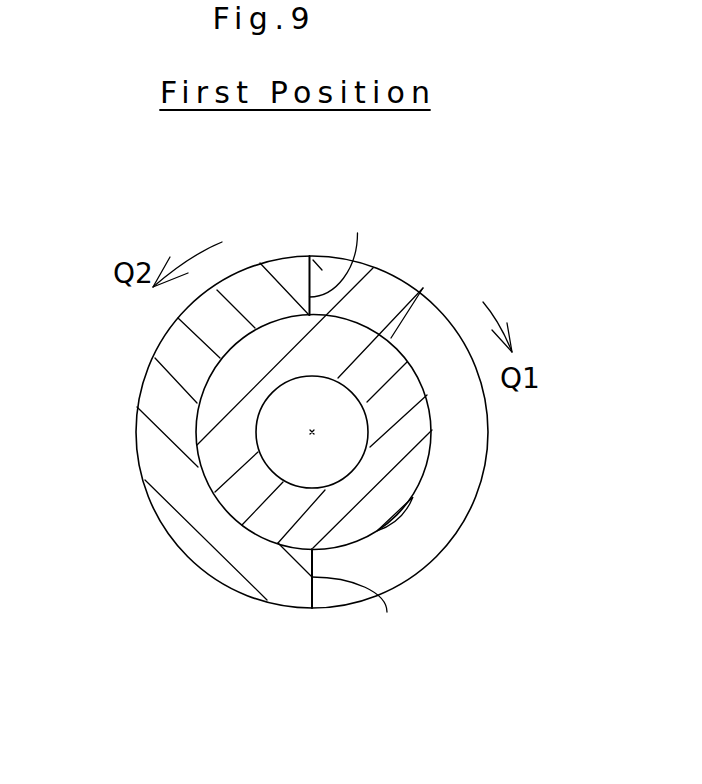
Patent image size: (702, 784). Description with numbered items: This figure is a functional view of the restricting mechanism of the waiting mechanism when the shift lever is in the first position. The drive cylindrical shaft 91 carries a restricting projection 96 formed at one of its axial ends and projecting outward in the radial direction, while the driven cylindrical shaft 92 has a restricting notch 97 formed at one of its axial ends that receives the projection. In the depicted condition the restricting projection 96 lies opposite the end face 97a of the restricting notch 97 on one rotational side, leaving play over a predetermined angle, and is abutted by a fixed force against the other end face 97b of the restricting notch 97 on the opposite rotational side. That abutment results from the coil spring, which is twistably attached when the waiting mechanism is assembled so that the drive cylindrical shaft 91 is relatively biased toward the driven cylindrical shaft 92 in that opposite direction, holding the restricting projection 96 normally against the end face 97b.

The drive cylindrical shaft 91 is at (227, 433).
The driven cylindrical shaft 92 is at (172, 385).
The restricting projection 96 is at (378, 310).
The restricting notch 97 is at (420, 522).
The end face 97a is at (371, 602).
The end face 97b is at (350, 261).